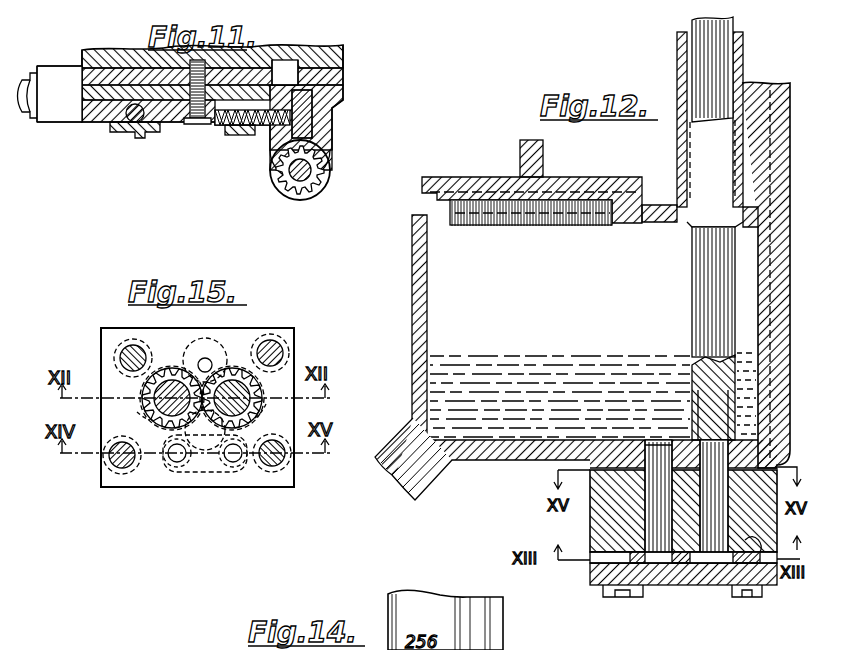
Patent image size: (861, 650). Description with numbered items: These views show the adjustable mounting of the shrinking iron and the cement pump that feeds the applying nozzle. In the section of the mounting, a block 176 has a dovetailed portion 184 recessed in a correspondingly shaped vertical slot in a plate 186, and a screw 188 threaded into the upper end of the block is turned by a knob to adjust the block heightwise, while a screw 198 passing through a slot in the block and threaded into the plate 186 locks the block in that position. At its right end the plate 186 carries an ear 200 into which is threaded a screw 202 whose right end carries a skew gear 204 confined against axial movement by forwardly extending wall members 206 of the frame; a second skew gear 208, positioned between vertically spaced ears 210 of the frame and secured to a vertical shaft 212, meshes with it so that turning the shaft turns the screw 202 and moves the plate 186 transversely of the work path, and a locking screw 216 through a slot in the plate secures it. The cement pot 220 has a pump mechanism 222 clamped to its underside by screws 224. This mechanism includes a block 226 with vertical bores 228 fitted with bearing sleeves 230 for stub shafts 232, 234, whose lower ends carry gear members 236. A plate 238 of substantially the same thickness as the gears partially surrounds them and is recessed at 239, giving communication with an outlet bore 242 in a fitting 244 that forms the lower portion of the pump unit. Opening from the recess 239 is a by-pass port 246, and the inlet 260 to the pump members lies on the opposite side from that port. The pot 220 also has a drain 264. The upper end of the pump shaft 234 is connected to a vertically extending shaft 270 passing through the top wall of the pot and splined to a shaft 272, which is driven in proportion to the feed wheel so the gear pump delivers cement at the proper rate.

In FIG. 11, the block 176 is at (95, 126).
In FIG. 11, the dovetailed portion 184 is at (100, 112).
In FIG. 11, the plate 186 is at (90, 130).
In FIG. 11, the screw 188 is at (140, 122).
In FIG. 11, the screw 198 is at (130, 139).
In FIG. 11, the ear 200 is at (237, 128).
In FIG. 11, the screw 202 is at (266, 137).
In FIG. 11, the skew gear 204 is at (314, 112).
In FIG. 11, the wall members 206 is at (273, 85).
In FIG. 11, the second skew gear 208 is at (330, 172).
In FIG. 11, the ears 210 is at (334, 155).
In FIG. 11, the vertical shaft 212 is at (290, 182).
In FIG. 11, the locking screw 216 is at (185, 126).
In FIG. 12, the cement pot 220 is at (415, 268).
In FIG. 12, the pump mechanism 222 is at (571, 538).
In FIG. 15, the screws 224 is at (271, 350).
In FIG. 12, the screws 224 is at (738, 598).
In FIG. 15, the block 226 is at (287, 412).
In FIG. 12, the block 226 is at (768, 528).
In FIG. 12, the vertical bores 228 is at (590, 520).
In FIG. 12, the bearing sleeves 230 is at (632, 484).
In FIG. 15, the stub shaft 232 is at (165, 396).
In FIG. 12, the stub shaft 232 is at (612, 560).
In FIG. 15, the pump shaft 234 is at (240, 396).
In FIG. 12, the pump shaft 234 is at (713, 545).
In FIG. 12, the gear members 236 is at (625, 593).
In FIG. 12, the plate 238 is at (748, 552).
In FIG. 15, the recess 239 is at (207, 474).
In FIG. 15, the outlet bore 242 is at (172, 461).
In FIG. 12, the fitting 244 is at (652, 538).
In FIG. 15, the by-pass port 246 is at (236, 461).
In FIG. 15, the inlet 260 is at (207, 362).
In FIG. 12, the drain 264 is at (403, 478).
In FIG. 12, the vertically extending shaft 270 is at (707, 283).
In FIG. 12, the shaft 272 is at (718, 49).